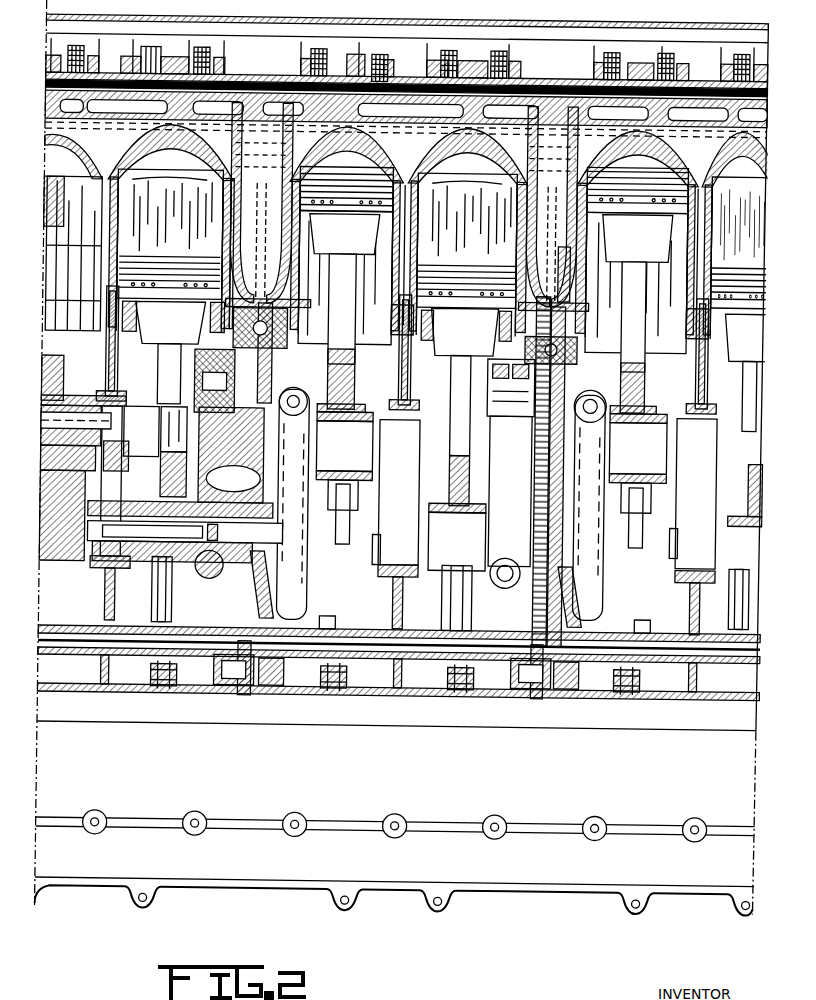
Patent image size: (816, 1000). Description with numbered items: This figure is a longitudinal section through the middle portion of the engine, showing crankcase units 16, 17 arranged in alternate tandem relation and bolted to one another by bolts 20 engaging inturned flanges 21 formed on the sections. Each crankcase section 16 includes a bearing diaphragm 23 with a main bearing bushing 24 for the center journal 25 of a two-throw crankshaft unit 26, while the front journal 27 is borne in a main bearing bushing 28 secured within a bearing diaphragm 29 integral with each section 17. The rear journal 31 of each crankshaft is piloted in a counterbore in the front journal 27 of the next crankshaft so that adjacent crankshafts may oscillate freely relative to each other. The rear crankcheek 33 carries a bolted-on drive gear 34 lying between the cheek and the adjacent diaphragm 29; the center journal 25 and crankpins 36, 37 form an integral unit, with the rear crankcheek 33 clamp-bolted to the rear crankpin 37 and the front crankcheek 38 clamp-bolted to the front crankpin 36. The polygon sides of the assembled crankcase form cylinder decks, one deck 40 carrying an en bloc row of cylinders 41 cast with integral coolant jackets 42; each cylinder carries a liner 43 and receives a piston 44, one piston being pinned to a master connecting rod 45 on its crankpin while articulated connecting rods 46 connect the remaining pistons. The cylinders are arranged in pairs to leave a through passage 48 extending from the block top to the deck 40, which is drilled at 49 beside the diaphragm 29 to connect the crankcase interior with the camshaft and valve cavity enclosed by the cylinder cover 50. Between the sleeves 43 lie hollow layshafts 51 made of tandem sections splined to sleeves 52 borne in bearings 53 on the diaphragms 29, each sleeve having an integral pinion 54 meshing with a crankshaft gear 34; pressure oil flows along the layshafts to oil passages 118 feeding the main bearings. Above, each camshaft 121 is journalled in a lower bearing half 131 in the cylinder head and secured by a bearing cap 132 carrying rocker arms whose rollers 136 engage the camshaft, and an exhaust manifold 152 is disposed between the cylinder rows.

The crankcase unit 16 is at (90, 692).
The crankcase unit 17 is at (232, 693).
The bolt 20 is at (346, 678).
The inturned flange 21 is at (348, 663).
The bearing diaphragm 23 is at (113, 363).
The main bearing bushing 24 is at (118, 398).
The center journal 25 is at (410, 442).
The two-throw crankshaft unit 26 is at (376, 548).
The front journal 27 is at (268, 518).
The main bearing bushing 28 is at (276, 388).
The bearing diaphragm 29 is at (250, 312).
The rear journal 31 is at (157, 459).
The rear crankcheek 33 is at (210, 576).
The drive gear 34 is at (536, 507).
The front crankpin 36 is at (491, 479).
The rear crankpin 37 is at (457, 537).
The front crankcheek 38 is at (440, 506).
The cylinder deck 40 is at (548, 290).
The cylinder 41 is at (413, 155).
The coolant jacket 42 is at (96, 270).
The liner 43 is at (356, 335).
The piston 44 is at (160, 257).
The master connecting rod 45 is at (350, 372).
The articulated connecting rod 46 is at (172, 616).
The through passage 48 is at (409, 207).
The drilling 49 is at (546, 313).
The cylinder cover 50 is at (694, 23).
The layshaft 51 is at (118, 625).
The sleeve 52 is at (483, 619).
The bearing 53 is at (422, 673).
The pinion 54 is at (378, 671).
The oil passage 118 is at (572, 600).
The camshaft 121 is at (232, 68).
The lower bearing half 131 is at (500, 107).
The bearing cap 132 is at (350, 50).
The roller 136 is at (316, 46).
The exhaust manifold 152 is at (360, 872).